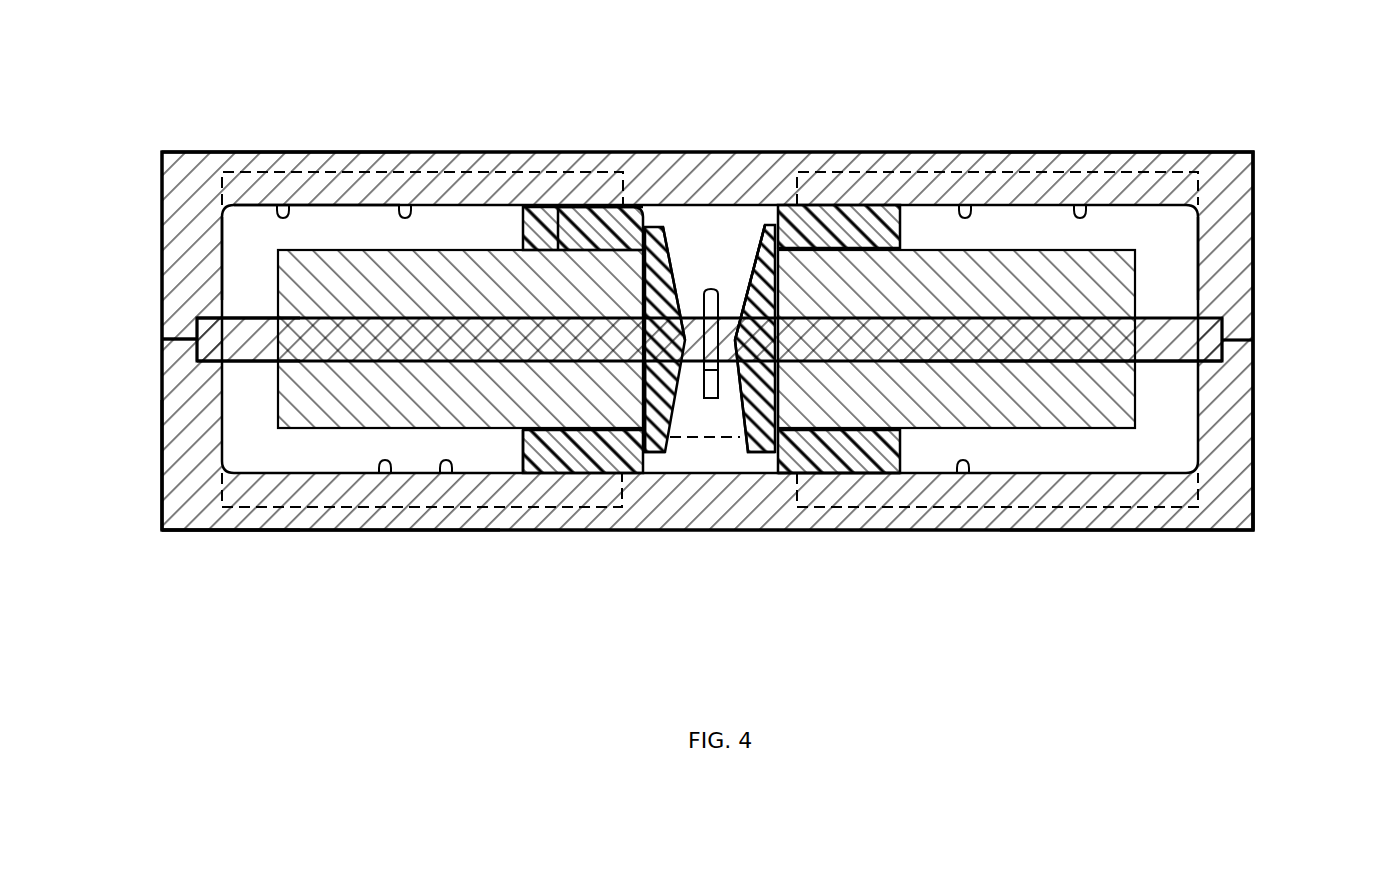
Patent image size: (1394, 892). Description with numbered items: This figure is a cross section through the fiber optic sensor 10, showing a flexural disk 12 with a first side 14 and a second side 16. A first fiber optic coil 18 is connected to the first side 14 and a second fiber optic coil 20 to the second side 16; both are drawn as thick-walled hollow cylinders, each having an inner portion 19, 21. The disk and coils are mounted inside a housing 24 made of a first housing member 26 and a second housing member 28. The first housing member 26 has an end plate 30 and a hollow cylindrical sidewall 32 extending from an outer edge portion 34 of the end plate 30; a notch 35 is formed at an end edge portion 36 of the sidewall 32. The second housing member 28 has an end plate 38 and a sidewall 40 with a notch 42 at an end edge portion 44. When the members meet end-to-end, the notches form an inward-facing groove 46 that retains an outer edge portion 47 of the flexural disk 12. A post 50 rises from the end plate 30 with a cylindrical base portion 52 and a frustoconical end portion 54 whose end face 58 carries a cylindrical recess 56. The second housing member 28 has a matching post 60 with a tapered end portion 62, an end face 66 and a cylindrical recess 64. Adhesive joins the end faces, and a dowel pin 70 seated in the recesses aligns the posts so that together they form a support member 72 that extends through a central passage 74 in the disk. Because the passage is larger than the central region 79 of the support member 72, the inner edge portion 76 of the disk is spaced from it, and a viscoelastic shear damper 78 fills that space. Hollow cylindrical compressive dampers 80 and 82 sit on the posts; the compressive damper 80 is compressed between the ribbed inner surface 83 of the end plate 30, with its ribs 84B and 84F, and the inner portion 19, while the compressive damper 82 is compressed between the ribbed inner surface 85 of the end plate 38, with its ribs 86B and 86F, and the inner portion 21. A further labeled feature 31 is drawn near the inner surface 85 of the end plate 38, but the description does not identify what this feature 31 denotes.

The fiber optic sensor 10 is at (832, 666).
The flexural disk 12 is at (1057, 362).
The first side 14 is at (1033, 362).
The second side 16 is at (985, 318).
The first fiber optic coil 18 is at (330, 430).
The inner portion 19 is at (548, 473).
The second fiber optic coil 20 is at (375, 250).
The inner portion 21 is at (558, 210).
The housing 24 is at (128, 495).
The first housing member 26 is at (156, 528).
The second housing member 28 is at (162, 166).
The end plate 30 is at (228, 530).
The cavity surface 31 is at (1080, 205).
The sidewall 32 is at (1253, 390).
The outer edge portion 34 is at (1160, 530).
The notch 35 is at (1213, 360).
The end edge portion 36 is at (1262, 344).
The end plate 38 is at (1174, 152).
The sidewall 40 is at (222, 210).
The notch 42 is at (240, 322).
The end edge portion 44 is at (140, 327).
The groove 46 is at (210, 352).
The outer edge portion 47 is at (1222, 318).
The post 50 is at (625, 440).
The base portion 52 is at (785, 462).
The end portion 54 is at (820, 440).
The cylindrical recess 56 is at (713, 400).
The end face 58 is at (714, 292).
The post 60 is at (757, 310).
The end portion 62 is at (703, 312).
The cylindrical recess 64 is at (645, 300).
The end face 66 is at (704, 398).
The dowel pin 70 is at (718, 380).
The support member 72 is at (630, 376).
The central passage 74 is at (797, 372).
The inner edge portion 76 is at (775, 312).
The shear damper 78 is at (678, 262).
The central region 79 is at (567, 305).
The compressive damper 80 is at (530, 440).
The compressive damper 82 is at (903, 223).
The ribbed inner surface 83 is at (385, 473).
The rib 84B is at (446, 473).
The rib 84F is at (963, 473).
The inner surface 85 is at (283, 205).
The rib 86B is at (405, 205).
The rib 86F is at (965, 205).